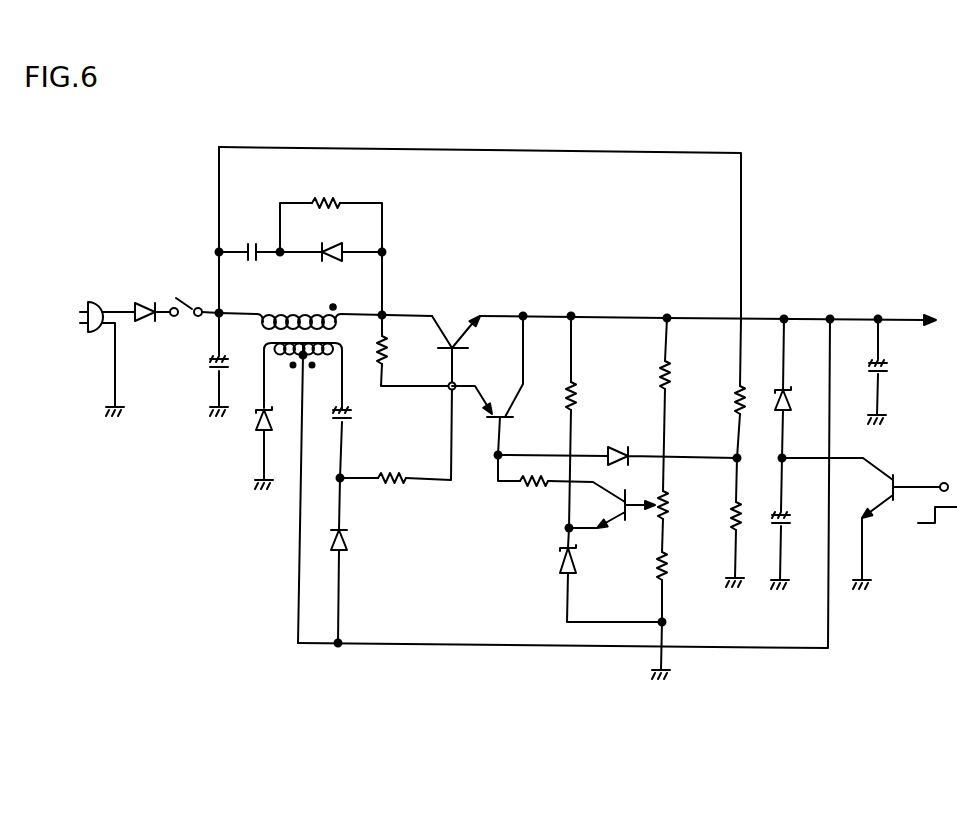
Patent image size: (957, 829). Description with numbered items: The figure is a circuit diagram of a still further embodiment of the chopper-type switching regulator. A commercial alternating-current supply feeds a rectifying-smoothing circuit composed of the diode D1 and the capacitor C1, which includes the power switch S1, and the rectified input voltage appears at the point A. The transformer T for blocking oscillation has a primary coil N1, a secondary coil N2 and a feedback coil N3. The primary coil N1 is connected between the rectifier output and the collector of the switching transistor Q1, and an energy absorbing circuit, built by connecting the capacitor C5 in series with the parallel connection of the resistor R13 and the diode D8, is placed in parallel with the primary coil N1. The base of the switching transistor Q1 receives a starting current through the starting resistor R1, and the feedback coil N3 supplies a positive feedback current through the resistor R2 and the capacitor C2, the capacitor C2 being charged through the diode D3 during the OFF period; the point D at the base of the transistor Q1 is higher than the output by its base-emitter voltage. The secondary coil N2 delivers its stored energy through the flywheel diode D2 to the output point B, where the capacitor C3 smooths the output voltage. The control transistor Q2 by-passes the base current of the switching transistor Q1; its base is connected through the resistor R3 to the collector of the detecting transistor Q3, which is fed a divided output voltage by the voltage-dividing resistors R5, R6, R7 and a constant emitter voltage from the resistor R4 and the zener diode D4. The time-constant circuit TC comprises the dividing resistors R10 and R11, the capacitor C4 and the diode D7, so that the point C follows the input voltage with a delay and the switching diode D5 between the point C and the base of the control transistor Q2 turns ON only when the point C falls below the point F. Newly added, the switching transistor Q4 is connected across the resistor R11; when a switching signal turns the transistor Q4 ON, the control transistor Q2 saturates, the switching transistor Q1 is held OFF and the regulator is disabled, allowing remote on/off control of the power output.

The diode D1 is at (152, 326).
The power switch S1 is at (194, 294).
The point A is at (221, 311).
The capacitor C1 is at (212, 364).
The capacitor C5 is at (248, 237).
The diode D8 is at (331, 265).
The resistor R13 is at (331, 214).
The primary coil N1 is at (299, 306).
The transformer T is at (322, 335).
The secondary coil N2 is at (291, 366).
The feedback coil N3 is at (320, 367).
The flywheel diode D2 is at (254, 448).
The capacitor C2 is at (338, 436).
The diode D3 is at (353, 561).
The resistor R2 is at (396, 449).
The starting resistor R1 is at (414, 349).
The switching transistor Q1 is at (456, 338).
The point D is at (449, 389).
The control transistor Q2 is at (489, 384).
The point F is at (496, 457).
The resistor R3 is at (561, 483).
The detecting transistor Q3 is at (611, 511).
The resistor R4 is at (585, 421).
The zener diode D4 is at (597, 575).
The switching diode D5 is at (617, 444).
The voltage-dividing resistor R5 is at (653, 403).
The voltage-dividing resistor R6 is at (679, 521).
The voltage-dividing resistor R7 is at (651, 615).
The voltage dividing resistor R10 is at (756, 388).
The point C is at (739, 456).
The time-constant circuit TC is at (758, 473).
The voltage dividing resistor R11 is at (752, 544).
The output point B is at (787, 316).
The diode D7 is at (796, 390).
The capacitor C4 is at (781, 523).
The capacitor C3 is at (864, 370).
The switching transistor Q4 is at (869, 523).